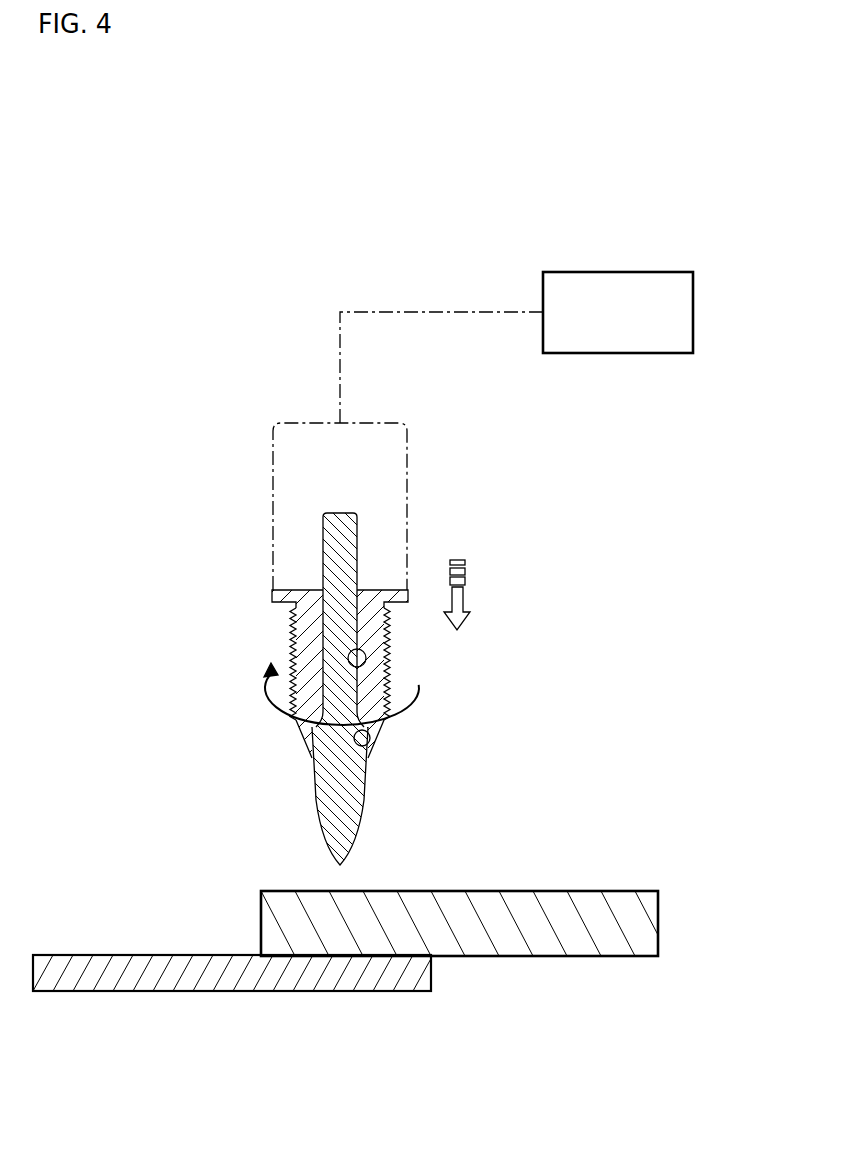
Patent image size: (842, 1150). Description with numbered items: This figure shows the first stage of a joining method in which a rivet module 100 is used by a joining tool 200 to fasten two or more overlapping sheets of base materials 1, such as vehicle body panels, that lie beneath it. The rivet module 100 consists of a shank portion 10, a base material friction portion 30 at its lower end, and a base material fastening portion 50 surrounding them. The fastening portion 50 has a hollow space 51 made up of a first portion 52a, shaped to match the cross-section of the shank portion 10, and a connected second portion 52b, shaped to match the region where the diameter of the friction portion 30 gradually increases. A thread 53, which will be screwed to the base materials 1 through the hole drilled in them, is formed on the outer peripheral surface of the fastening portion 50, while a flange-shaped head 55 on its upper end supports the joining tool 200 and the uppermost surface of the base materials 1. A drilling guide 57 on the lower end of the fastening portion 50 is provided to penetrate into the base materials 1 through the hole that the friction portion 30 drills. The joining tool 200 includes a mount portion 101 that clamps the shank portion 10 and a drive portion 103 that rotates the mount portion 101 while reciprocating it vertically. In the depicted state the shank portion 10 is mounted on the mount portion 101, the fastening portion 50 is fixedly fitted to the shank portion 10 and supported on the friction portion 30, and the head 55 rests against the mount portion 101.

The base materials 1 is at (417, 982).
The shank portion 10 is at (312, 530).
The base material friction portion 30 is at (305, 804).
The base material fastening portion 50 is at (354, 660).
The hollow space 51 is at (489, 645).
The first portion 52a is at (362, 659).
The second portion 52b is at (369, 741).
The thread 53 is at (395, 648).
The head 55 is at (272, 595).
The drilling guide 57 is at (297, 738).
The rivet module 100 is at (330, 170).
The mount portion 101 is at (408, 490).
The drive portion 103 is at (585, 353).
The joining tool 200 is at (601, 420).